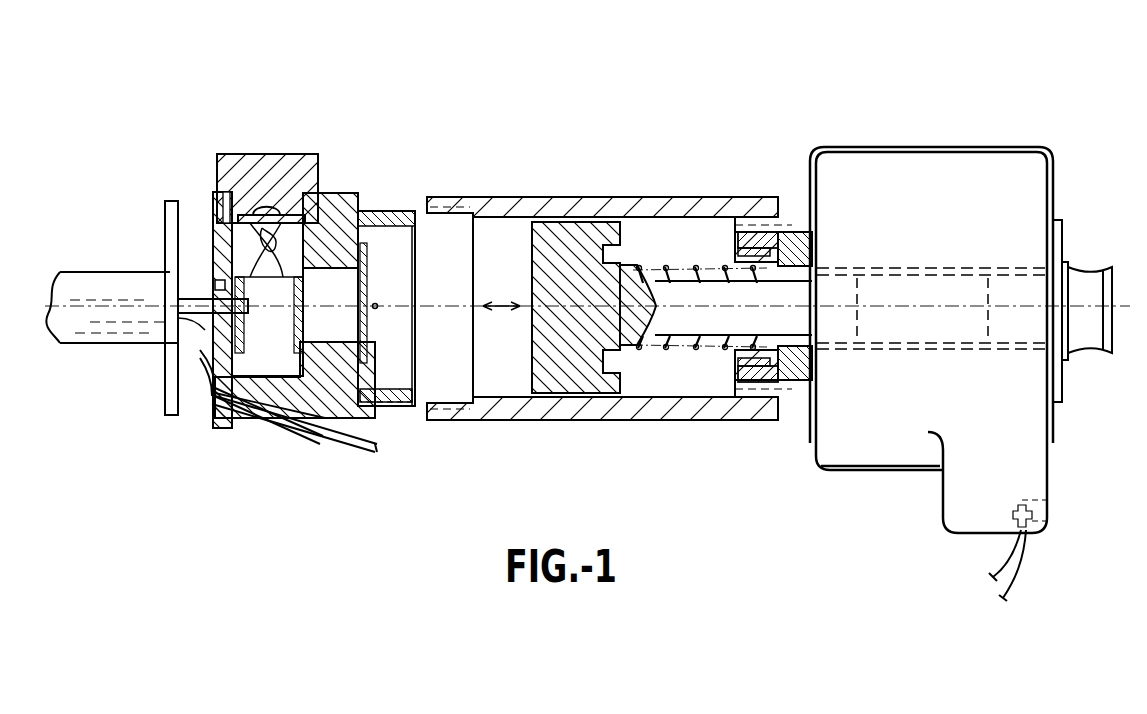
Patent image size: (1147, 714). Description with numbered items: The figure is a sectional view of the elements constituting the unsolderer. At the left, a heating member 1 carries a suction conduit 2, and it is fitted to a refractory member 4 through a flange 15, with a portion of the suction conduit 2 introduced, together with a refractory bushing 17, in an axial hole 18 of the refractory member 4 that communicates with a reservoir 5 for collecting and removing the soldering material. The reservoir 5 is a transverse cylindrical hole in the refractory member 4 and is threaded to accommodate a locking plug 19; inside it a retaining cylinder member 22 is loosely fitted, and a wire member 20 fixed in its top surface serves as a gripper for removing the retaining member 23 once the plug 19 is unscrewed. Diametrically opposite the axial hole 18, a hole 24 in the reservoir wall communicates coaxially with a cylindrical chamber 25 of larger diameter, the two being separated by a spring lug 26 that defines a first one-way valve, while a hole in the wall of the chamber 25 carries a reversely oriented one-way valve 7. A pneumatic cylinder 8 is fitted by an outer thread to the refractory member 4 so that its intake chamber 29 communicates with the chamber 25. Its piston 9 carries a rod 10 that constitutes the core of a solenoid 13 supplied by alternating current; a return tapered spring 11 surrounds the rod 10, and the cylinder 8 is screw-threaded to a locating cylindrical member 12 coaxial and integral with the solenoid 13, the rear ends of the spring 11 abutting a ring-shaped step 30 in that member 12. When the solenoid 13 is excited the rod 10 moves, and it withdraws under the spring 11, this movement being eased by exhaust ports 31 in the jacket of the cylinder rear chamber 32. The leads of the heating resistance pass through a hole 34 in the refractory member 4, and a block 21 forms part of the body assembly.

The heating member 1 is at (87, 272).
The suction conduit 2 is at (193, 300).
The refractory member 4 is at (218, 413).
The reservoir 5 is at (243, 247).
The one-way valve 7 is at (376, 310).
The pneumatic cylinder 8 is at (555, 197).
The piston 9 is at (575, 380).
The rod 10 is at (717, 327).
The return tapered spring 11 is at (668, 347).
The locating cylindrical member 12 is at (1085, 280).
The solenoid 13 is at (960, 178).
The flange 15 is at (172, 397).
The refractory bushing 17 is at (207, 318).
The axial hole 18 is at (167, 338).
The locking plug 19 is at (265, 178).
The wire member 20 is at (262, 250).
The housing block 21 is at (283, 270).
The retaining cylinder member 22 is at (297, 415).
The retaining member 23 is at (223, 405).
The hole 24 is at (333, 440).
The cylindrical chamber 25 is at (400, 377).
The spring lug 26 is at (380, 211).
The intake chamber 29 is at (498, 235).
The ring-shaped step 30 is at (775, 198).
The exhaust ports 31 is at (755, 232).
The cylinder rear chamber 32 is at (650, 232).
The hole 34 is at (275, 430).